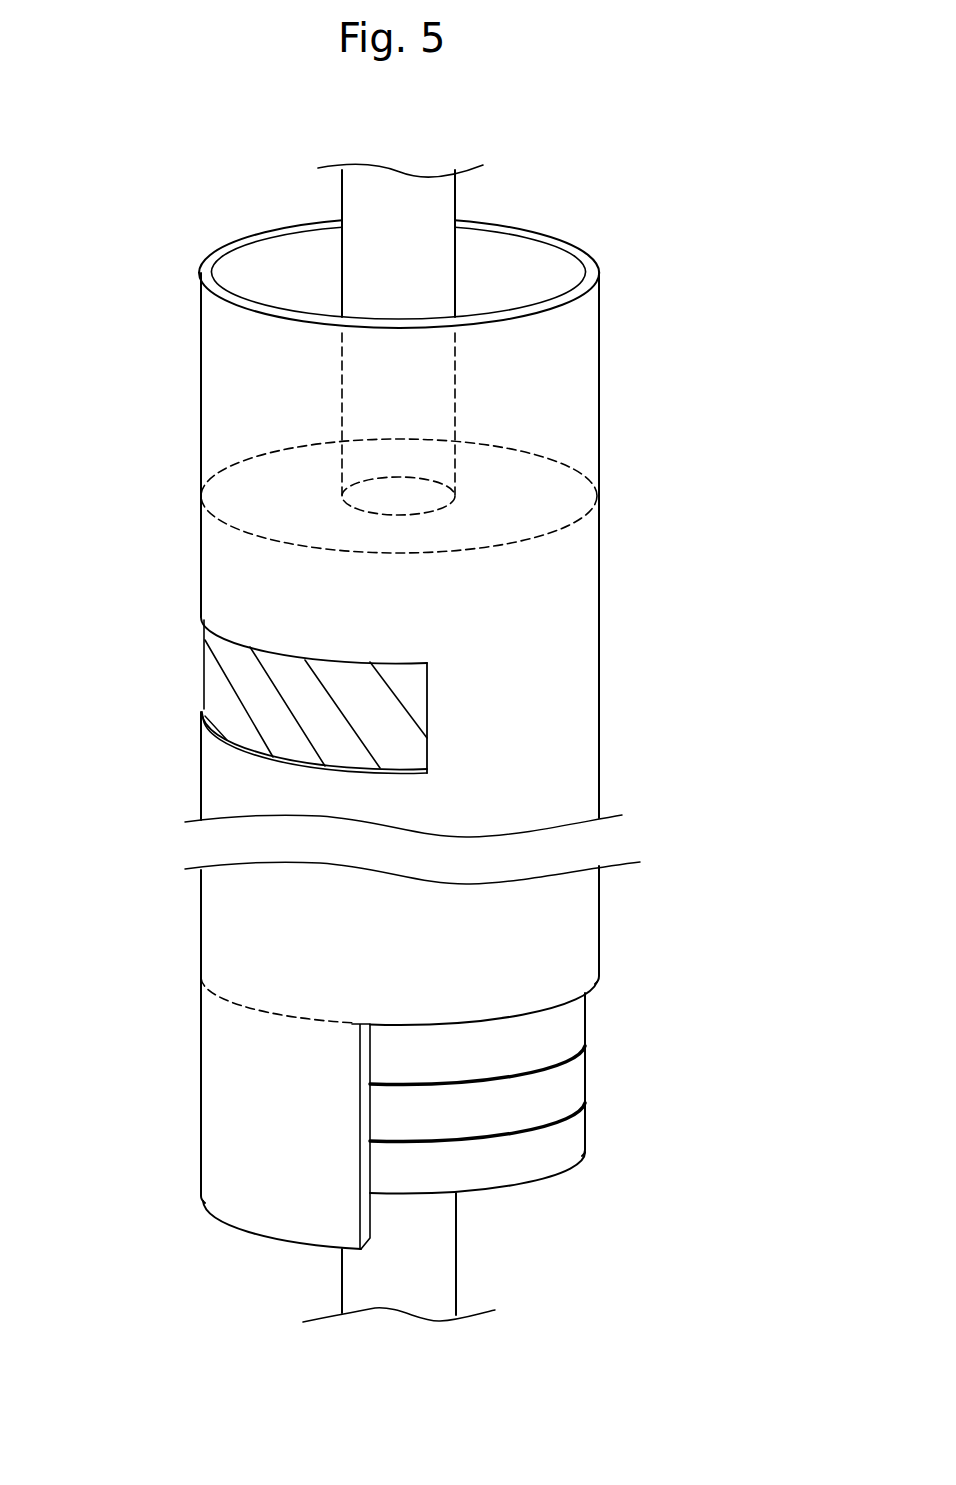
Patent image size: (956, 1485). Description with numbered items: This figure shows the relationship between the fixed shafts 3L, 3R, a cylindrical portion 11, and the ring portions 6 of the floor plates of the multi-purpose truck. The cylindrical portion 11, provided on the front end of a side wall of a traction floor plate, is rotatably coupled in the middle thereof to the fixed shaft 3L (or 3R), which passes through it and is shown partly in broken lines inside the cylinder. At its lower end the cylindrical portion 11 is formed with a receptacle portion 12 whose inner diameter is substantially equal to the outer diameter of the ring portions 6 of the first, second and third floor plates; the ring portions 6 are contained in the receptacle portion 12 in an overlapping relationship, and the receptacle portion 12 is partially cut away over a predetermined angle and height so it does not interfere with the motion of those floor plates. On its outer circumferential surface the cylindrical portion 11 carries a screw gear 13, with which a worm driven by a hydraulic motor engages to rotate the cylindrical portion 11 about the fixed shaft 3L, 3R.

The fixed shaft 3L is at (468, 738).
The fixed shaft 3R is at (430, 212).
The ring portion 6 is at (572, 1032).
The cylindrical portion 11 is at (572, 667).
The receptacle portion 12 is at (592, 986).
The screw gear 13 is at (210, 690).